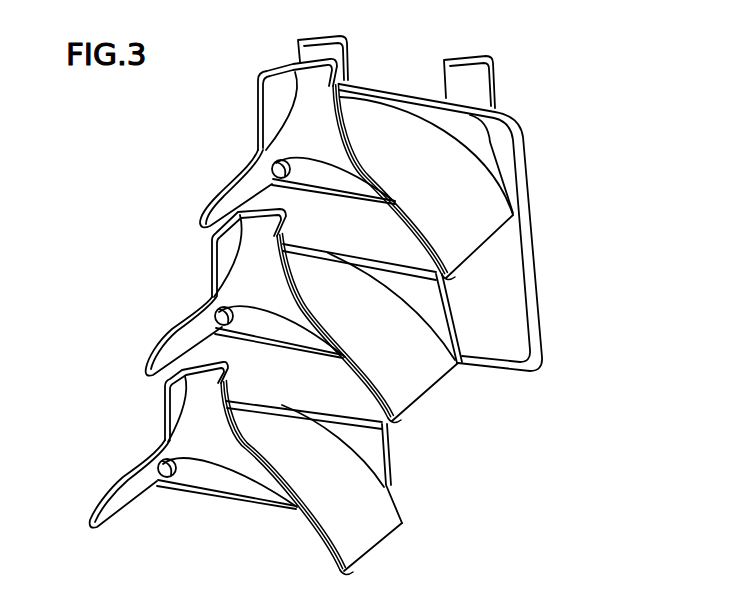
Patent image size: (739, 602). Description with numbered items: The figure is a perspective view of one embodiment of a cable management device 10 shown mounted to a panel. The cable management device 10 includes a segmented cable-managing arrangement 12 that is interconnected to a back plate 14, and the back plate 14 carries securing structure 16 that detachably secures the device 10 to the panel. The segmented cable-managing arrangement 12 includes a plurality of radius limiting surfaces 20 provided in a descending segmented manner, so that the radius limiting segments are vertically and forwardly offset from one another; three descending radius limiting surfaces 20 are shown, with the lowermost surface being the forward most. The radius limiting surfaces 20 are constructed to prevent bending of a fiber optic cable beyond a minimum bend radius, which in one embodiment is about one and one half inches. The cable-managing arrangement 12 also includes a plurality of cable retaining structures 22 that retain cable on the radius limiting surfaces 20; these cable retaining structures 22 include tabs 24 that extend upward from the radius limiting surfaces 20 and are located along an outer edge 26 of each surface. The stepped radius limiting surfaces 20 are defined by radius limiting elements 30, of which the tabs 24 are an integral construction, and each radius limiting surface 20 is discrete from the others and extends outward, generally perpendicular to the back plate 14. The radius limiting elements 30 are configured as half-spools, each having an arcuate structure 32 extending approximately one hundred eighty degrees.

The cable management device 10 is at (88, 201).
The segmented cable-managing arrangement 12 is at (110, 301).
The back plate 14 is at (530, 238).
The securing structure 16 is at (536, 76).
The radius limiting surfaces 20 is at (450, 182).
The cable retaining structures 22 is at (300, 100).
The tabs 24 is at (328, 134).
The outer edge 26 is at (408, 212).
The radius limiting elements 30 is at (228, 177).
The arcuate structure 32 is at (478, 228).